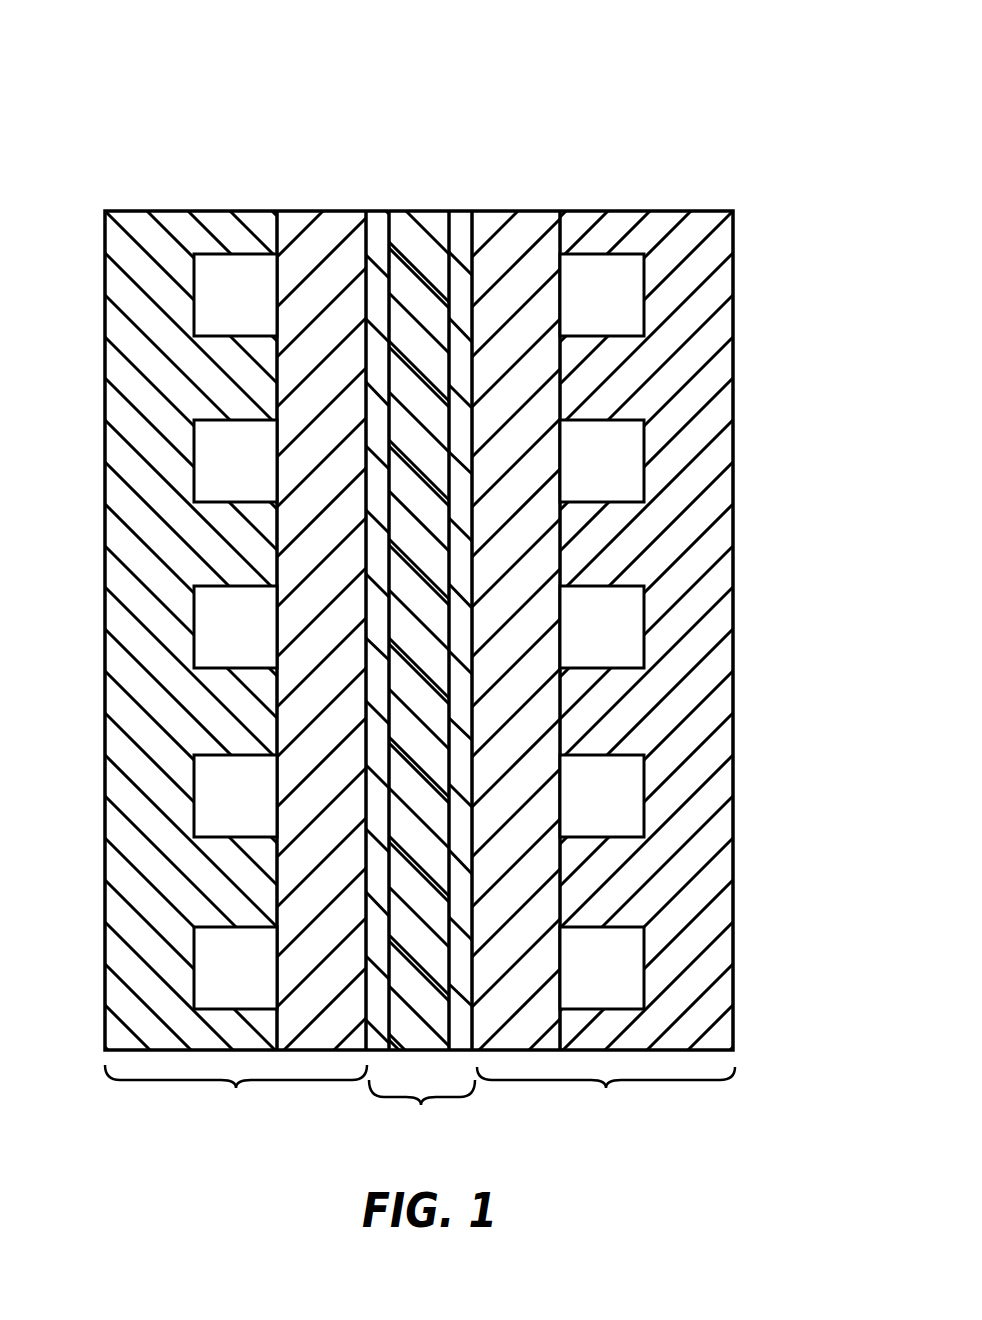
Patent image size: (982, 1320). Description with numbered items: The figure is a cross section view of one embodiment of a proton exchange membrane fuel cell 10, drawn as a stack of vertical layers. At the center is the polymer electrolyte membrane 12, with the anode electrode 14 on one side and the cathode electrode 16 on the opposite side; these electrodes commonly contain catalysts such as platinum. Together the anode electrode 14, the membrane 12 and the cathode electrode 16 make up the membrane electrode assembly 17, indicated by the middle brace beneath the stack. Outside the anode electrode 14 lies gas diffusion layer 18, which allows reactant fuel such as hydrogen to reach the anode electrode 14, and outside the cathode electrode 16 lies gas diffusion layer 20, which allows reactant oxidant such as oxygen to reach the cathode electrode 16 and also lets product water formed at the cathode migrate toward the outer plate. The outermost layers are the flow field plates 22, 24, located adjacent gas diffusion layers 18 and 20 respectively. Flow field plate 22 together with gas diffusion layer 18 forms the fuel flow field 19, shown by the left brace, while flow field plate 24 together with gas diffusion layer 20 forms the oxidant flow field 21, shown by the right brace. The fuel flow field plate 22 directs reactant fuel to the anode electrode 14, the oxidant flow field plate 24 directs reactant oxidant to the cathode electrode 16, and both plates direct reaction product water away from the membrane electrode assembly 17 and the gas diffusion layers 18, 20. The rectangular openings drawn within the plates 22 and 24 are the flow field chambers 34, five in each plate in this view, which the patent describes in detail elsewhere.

The proton exchange membrane fuel cell 10 is at (766, 130).
The polymer electrolyte membrane 12 is at (422, 210).
The anode electrode 14 is at (375, 210).
The cathode electrode 16 is at (462, 210).
The membrane electrode assembly 17 is at (422, 1110).
The gas diffusion layer 18 is at (315, 210).
The fuel flow field 19 is at (236, 1097).
The gas diffusion layer 20 is at (520, 210).
The oxidant flow field 21 is at (606, 1102).
The fuel flow field plate 22 is at (165, 208).
The oxidant flow field plate 24 is at (645, 210).
The flow field chambers 34 is at (615, 981).